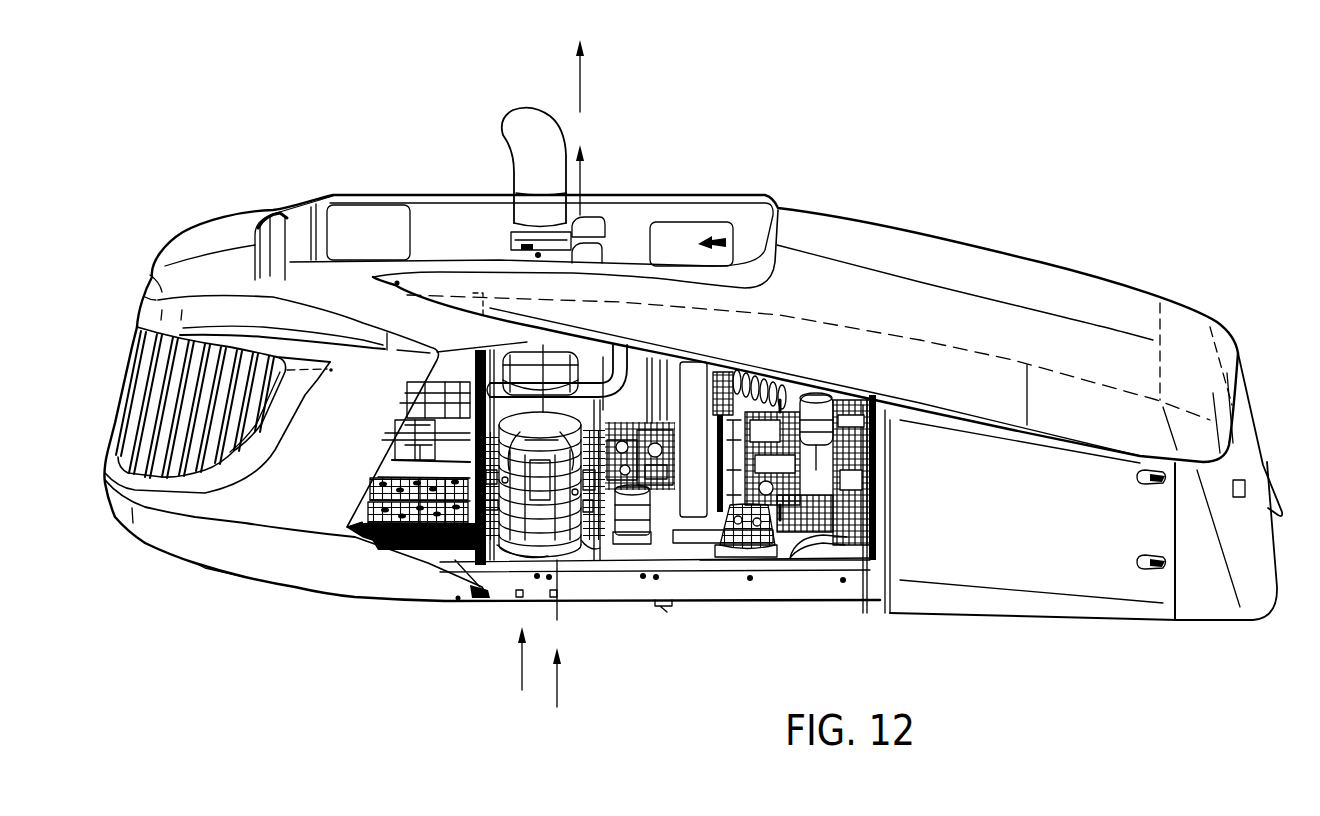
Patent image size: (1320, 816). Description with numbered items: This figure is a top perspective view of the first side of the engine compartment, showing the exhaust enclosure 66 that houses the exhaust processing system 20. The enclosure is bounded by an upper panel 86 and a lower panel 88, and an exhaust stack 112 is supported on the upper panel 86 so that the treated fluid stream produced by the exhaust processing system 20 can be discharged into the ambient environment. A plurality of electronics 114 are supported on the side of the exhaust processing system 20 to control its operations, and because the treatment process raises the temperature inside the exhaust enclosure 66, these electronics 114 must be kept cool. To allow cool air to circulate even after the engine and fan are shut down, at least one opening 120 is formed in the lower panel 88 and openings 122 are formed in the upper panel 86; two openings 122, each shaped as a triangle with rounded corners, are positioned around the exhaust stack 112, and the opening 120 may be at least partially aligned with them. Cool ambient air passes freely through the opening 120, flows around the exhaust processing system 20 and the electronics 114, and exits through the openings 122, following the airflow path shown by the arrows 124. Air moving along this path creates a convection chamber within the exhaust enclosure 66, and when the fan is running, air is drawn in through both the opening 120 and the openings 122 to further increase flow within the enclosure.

The exhaust processing system 20 is at (570, 552).
The exhaust enclosure 66 is at (490, 555).
The upper panel 86 is at (822, 230).
The lower panel 88 is at (548, 540).
The exhaust stack 112 is at (503, 127).
The electronics 114 is at (512, 530).
The opening 120 is at (586, 562).
The opening 122 is at (590, 257).
The arrows 124 is at (557, 693).